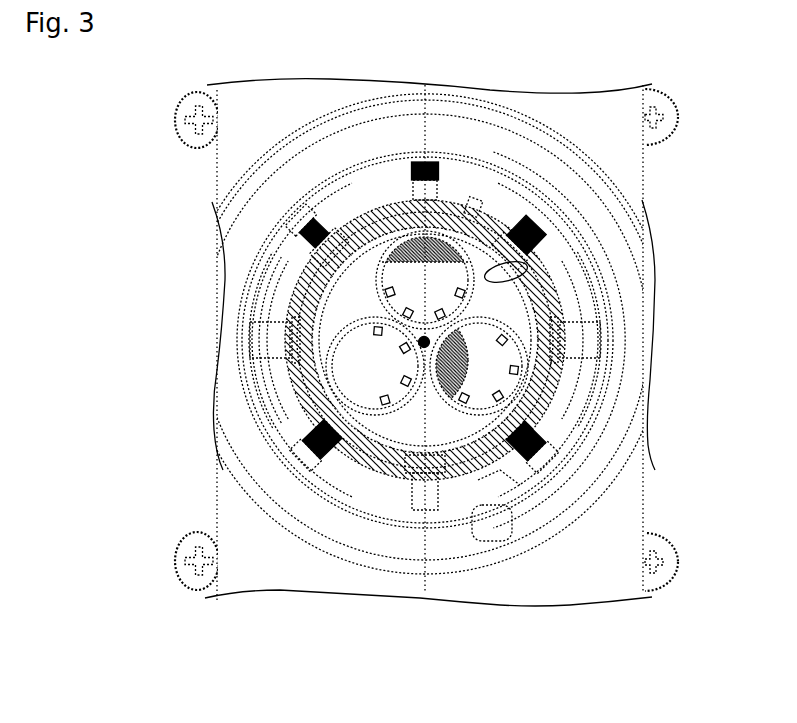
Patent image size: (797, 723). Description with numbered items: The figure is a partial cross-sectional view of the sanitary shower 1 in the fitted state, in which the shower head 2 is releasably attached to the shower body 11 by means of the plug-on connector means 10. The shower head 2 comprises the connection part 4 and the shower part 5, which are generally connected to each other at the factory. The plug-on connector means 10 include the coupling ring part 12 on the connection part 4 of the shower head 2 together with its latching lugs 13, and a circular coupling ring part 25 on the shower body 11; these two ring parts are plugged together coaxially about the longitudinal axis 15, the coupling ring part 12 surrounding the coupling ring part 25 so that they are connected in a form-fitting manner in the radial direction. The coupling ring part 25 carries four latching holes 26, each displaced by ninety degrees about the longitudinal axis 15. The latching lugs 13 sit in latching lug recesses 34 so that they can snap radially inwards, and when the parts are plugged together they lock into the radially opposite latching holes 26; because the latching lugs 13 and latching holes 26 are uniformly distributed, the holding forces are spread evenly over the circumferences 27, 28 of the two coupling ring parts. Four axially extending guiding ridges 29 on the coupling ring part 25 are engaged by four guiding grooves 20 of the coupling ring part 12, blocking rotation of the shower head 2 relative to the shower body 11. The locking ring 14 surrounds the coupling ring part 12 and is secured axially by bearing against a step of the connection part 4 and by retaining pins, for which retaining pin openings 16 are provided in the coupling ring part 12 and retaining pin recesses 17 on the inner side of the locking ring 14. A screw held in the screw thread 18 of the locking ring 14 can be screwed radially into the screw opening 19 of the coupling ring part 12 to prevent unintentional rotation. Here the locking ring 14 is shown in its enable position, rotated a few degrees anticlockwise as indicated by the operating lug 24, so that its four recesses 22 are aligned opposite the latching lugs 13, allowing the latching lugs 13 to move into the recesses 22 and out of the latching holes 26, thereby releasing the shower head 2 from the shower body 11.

The sanitary shower 1 is at (679, 161).
The shower head 2 is at (617, 317).
The connection part 4 is at (615, 272).
The shower part 5 is at (377, 250).
The plug-on connector means 10 is at (530, 367).
The shower body 11 is at (310, 283).
The coupling ring part 12 is at (277, 295).
The latching lugs 13 is at (323, 425).
The locking ring 14 is at (253, 312).
The longitudinal axis 15 is at (424, 342).
The retaining pin openings 16 is at (278, 335).
The retaining pin recesses 17 is at (263, 383).
The screw thread 18 is at (512, 483).
The screw opening 19 is at (455, 477).
The guiding grooves 20 is at (493, 217).
The recesses 22 is at (307, 453).
The operating lug 24 is at (493, 527).
The coupling ring part 25 is at (545, 393).
The latching holes 26 is at (490, 277).
The circumference 27 is at (323, 242).
The circumference 28 is at (413, 217).
The guiding ridges 29 is at (473, 207).
The latching lug recesses 34 is at (325, 240).